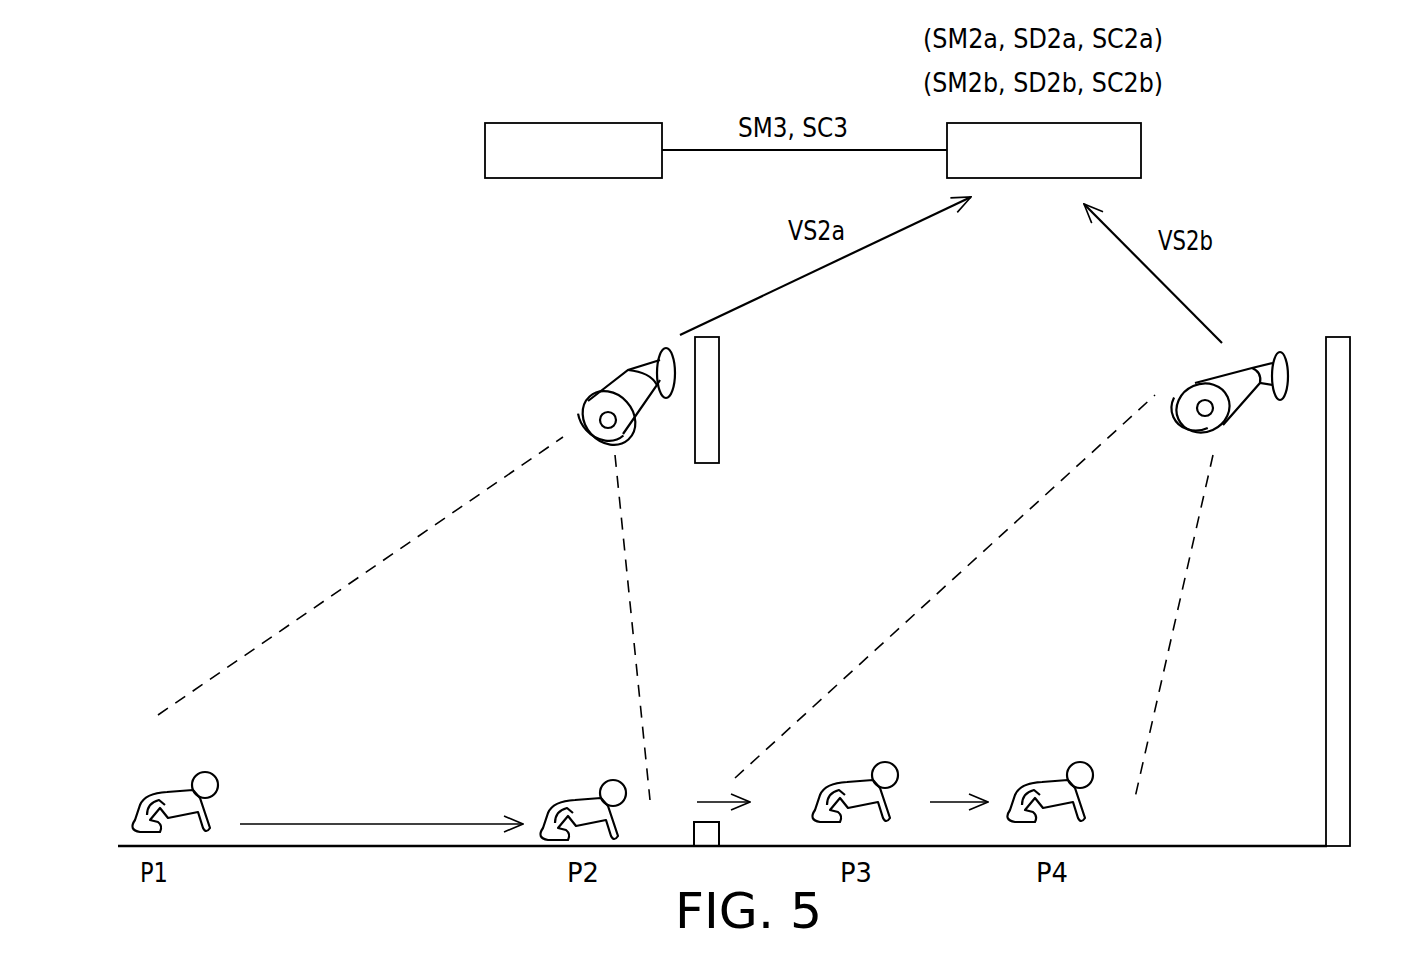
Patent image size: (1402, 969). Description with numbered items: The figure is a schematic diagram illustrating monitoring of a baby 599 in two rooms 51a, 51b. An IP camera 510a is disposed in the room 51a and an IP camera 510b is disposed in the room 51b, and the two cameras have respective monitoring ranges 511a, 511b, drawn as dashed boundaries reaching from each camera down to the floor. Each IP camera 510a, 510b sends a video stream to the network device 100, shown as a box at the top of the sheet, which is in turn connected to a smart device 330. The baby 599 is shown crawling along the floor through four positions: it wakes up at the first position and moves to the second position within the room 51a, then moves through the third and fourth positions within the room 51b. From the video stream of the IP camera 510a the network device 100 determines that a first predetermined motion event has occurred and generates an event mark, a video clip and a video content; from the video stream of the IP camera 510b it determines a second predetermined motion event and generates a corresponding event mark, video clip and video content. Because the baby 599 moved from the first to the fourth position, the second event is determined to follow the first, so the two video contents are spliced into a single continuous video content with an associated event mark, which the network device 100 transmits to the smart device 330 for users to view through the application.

The network device 100 is at (1031, 178).
The smart device 330 is at (577, 178).
The IP camera 510a is at (594, 372).
The IP camera 510b is at (1225, 375).
The monitoring range 511a is at (330, 593).
The monitoring range 511b is at (934, 592).
The room 51a is at (411, 450).
The room 51b is at (1004, 477).
The baby 599 is at (165, 795).